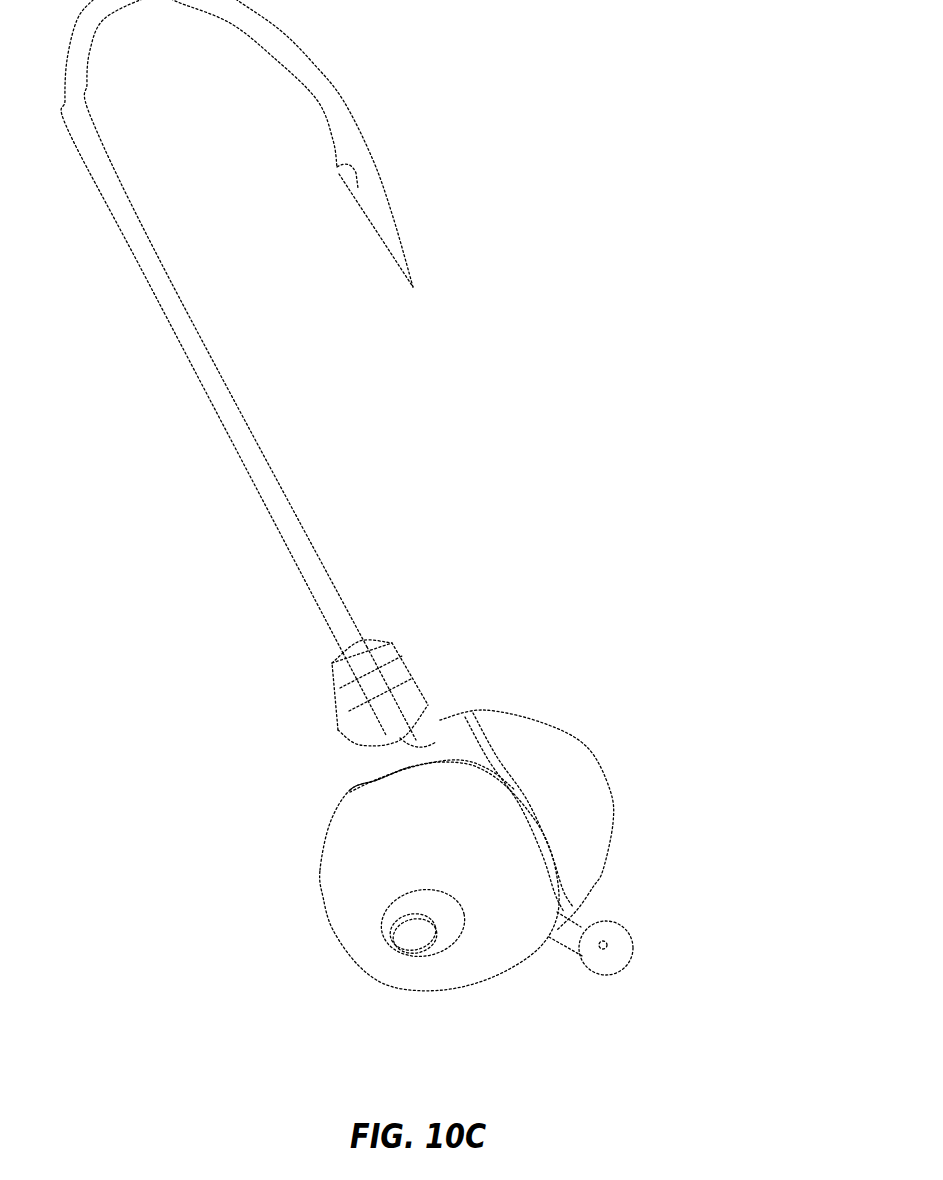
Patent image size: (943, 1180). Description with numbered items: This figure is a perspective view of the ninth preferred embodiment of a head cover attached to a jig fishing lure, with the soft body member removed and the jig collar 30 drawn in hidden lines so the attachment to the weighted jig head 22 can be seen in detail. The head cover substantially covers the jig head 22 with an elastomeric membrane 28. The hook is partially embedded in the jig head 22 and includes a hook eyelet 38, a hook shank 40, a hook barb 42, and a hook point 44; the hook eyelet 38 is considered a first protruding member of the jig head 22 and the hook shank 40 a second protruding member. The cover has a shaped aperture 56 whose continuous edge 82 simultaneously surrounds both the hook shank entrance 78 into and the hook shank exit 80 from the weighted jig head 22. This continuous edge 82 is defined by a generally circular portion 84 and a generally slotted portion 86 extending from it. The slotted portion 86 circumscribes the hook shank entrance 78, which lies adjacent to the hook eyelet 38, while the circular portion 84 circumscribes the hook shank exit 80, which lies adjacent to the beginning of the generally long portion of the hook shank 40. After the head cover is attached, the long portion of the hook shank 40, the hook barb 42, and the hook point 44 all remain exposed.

The weighted jig head 22 is at (463, 747).
The elastomeric membrane 28 is at (343, 887).
The jig collar 30 is at (350, 688).
The hook eyelet 38 is at (607, 947).
The hook shank 40 is at (232, 398).
The hook barb 42 is at (333, 172).
The hook point 44 is at (418, 287).
The shaped aperture 56 is at (540, 817).
The hook shank entrance 78 is at (573, 937).
The hook shank exit 80 is at (417, 750).
The continuous edge 82 is at (517, 773).
The generally circular portion 84 is at (363, 777).
The generally slotted portion 86 is at (557, 827).